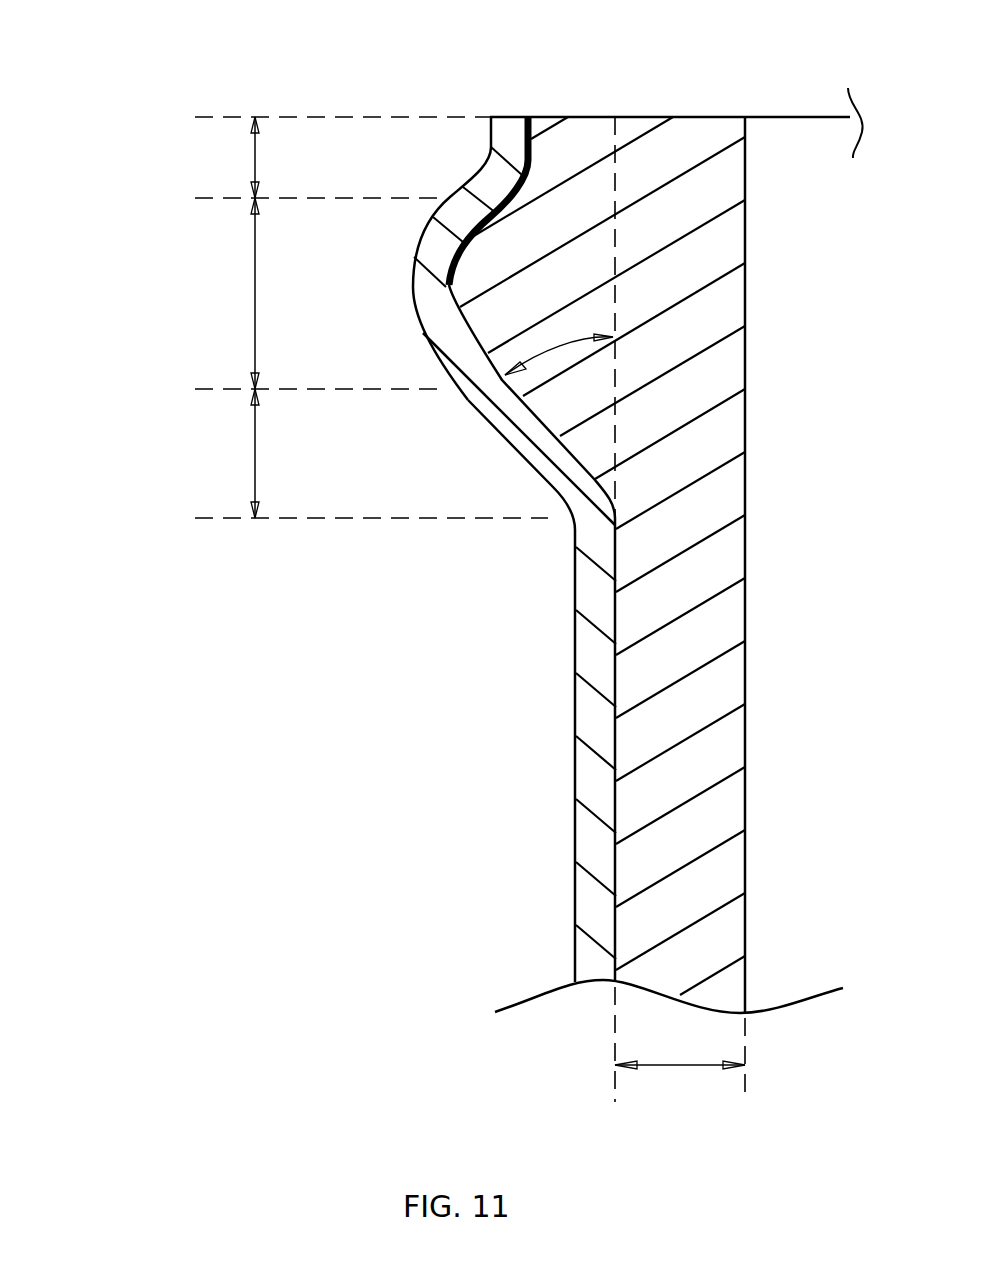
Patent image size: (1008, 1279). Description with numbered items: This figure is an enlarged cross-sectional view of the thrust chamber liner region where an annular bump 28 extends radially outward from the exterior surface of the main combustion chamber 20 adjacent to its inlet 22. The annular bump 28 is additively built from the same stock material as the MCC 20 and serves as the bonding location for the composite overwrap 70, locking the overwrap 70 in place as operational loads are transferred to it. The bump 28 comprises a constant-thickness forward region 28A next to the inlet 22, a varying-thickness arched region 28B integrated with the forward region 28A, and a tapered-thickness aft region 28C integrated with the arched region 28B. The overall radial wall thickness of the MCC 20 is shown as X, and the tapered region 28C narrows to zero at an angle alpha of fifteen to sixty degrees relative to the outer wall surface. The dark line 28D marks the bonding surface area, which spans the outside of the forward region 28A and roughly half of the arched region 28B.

The main combustion chamber (MCC) 20 is at (718, 568).
The inlet 22 is at (791, 115).
The annular bump 28 is at (557, 227).
The forward region 28A is at (255, 157).
The arched region 28B is at (255, 293).
The tapered region 28C is at (255, 455).
The bonding surface area 28D is at (437, 212).
The composite overwrap 70 is at (592, 783).